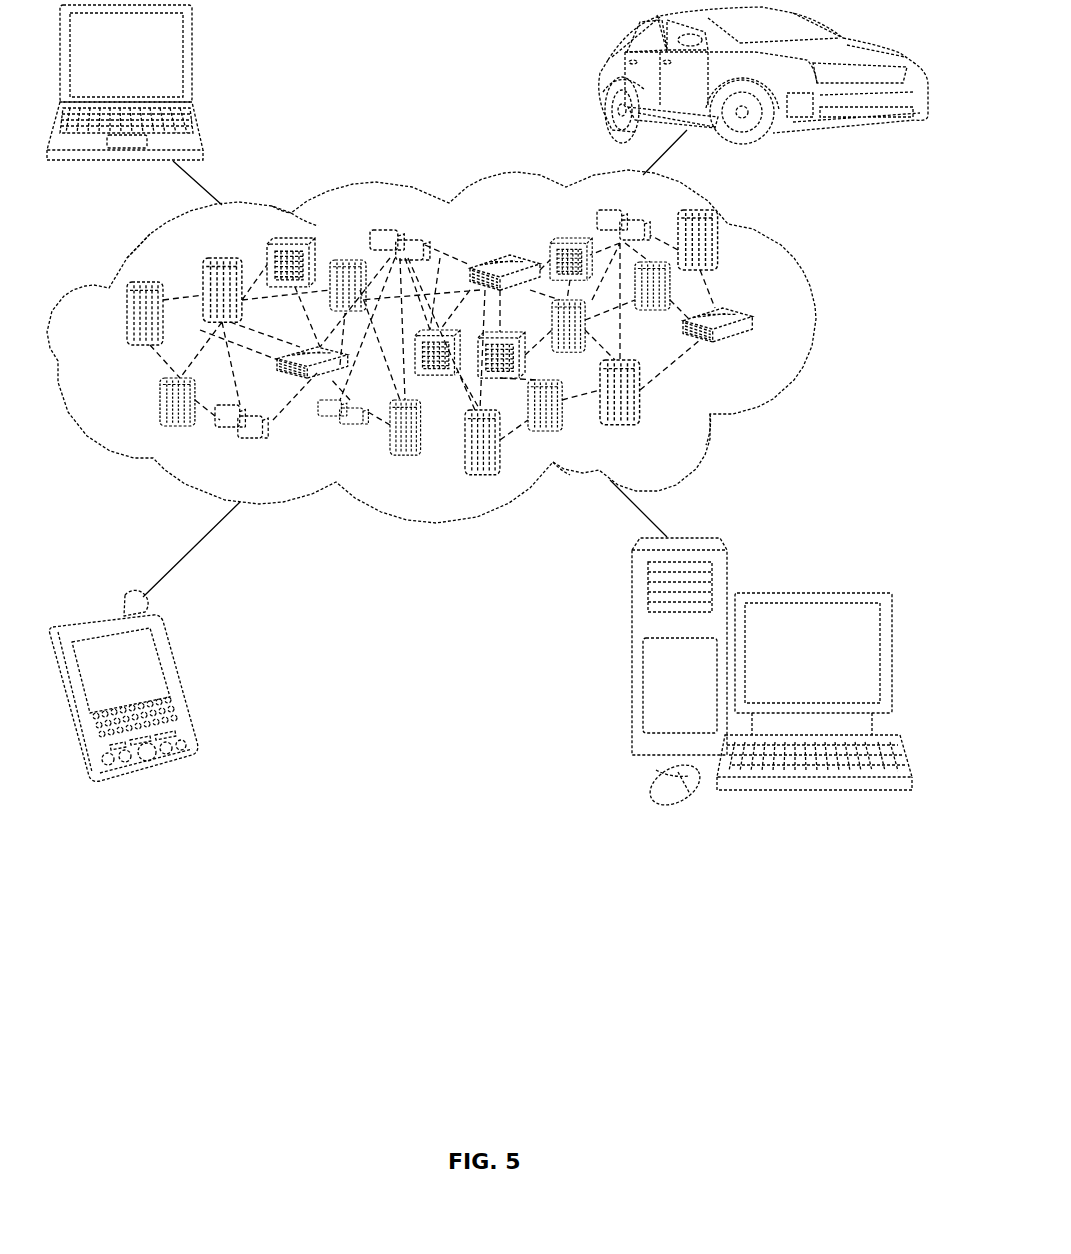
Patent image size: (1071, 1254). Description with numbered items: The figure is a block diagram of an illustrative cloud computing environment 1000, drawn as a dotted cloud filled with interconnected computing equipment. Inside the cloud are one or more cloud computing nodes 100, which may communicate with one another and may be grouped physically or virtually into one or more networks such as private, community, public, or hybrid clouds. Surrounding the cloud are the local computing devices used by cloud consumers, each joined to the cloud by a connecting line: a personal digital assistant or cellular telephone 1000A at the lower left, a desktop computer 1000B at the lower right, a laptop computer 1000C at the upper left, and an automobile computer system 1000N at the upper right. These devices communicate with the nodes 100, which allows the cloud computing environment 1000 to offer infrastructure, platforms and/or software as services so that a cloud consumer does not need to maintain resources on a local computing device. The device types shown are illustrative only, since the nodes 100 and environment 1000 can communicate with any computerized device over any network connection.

The cloud computing environment 1000 is at (815, 322).
The cloud computing nodes 100 is at (757, 348).
The personal digital assistant or cellular telephone 1000A is at (180, 683).
The desktop computer 1000B is at (808, 593).
The laptop computer 1000C is at (192, 63).
The automobile computer system 1000N is at (600, 79).